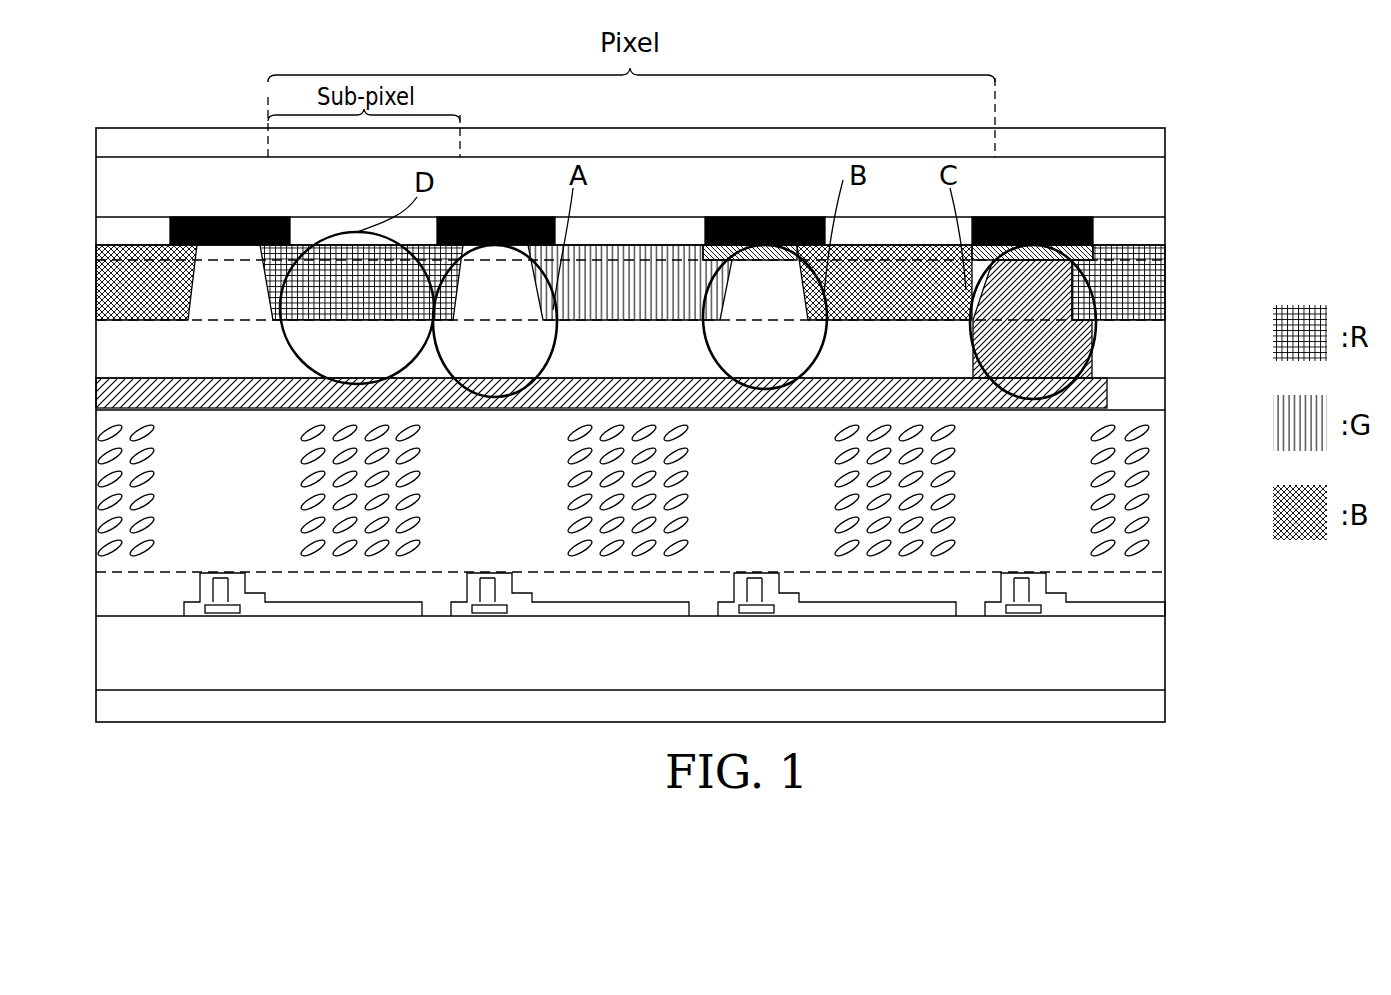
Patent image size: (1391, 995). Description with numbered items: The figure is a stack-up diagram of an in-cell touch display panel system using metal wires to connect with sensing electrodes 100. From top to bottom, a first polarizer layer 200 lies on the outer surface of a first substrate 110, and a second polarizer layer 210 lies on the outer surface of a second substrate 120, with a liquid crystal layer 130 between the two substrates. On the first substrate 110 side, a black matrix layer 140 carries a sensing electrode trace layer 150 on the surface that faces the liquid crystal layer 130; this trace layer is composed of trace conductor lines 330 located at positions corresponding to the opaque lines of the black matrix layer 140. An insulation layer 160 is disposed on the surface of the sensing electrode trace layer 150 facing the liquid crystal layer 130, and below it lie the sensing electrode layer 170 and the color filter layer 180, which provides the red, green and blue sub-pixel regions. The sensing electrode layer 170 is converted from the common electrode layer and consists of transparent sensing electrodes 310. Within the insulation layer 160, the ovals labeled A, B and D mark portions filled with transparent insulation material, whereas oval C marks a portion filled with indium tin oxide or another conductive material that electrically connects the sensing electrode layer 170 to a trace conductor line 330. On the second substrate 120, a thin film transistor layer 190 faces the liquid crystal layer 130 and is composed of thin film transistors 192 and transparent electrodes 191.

The in-cell touch display panel system using metal wires to connect with sensing ele 100 is at (172, 107).
The first substrate 110 is at (1165, 181).
The second substrate 120 is at (1150, 660).
The liquid crystal layer 130 is at (1140, 480).
The black matrix layer 140 is at (1140, 225).
The sensing electrode trace layer 150 is at (1143, 253).
The insulation layer 160 is at (1123, 343).
The sensing electrode layer 170 is at (1142, 402).
The color filter layer 180 is at (1112, 287).
The thin film transistor layer 190 is at (1135, 590).
The transparent electrodes 191 is at (1138, 608).
The thin film transistors 192 is at (1037, 590).
The first polarizer layer 200 is at (1150, 143).
The second polarizer layer 210 is at (1150, 708).
The transparent sensing electrodes 310 is at (1108, 392).
The trace conductor lines 330 is at (1132, 248).